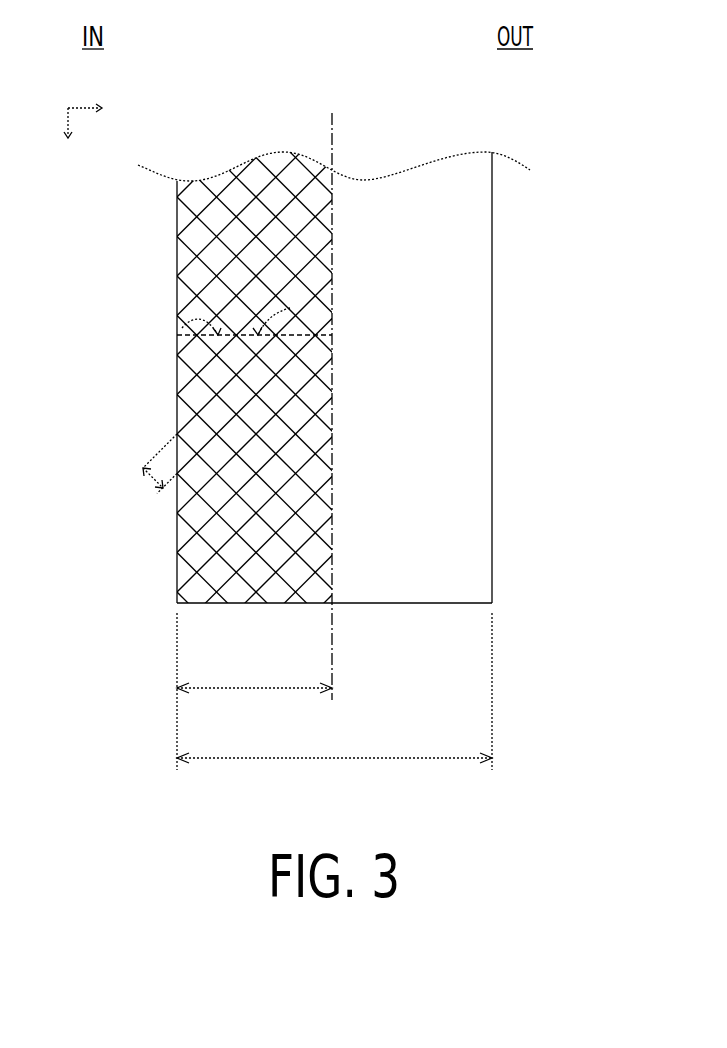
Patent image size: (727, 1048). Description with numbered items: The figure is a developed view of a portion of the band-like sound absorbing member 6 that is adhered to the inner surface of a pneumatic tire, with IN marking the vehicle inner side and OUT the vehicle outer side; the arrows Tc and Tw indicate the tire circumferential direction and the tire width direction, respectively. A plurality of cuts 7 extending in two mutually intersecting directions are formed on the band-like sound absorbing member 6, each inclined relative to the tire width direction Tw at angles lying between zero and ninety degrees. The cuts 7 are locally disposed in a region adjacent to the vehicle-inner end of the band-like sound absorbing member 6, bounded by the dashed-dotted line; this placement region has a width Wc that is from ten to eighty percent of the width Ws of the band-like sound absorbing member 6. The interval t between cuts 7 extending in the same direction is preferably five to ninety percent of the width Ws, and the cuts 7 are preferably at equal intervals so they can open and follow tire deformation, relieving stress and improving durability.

The band-like sound absorbing member 6 is at (415, 227).
The cuts 7 is at (248, 190).
The interval t is at (150, 480).
The width Wc is at (254, 676).
The width Ws is at (334, 746).
The tire width direction Tw is at (99, 108).
The tire circumferential direction Tc is at (69, 140).